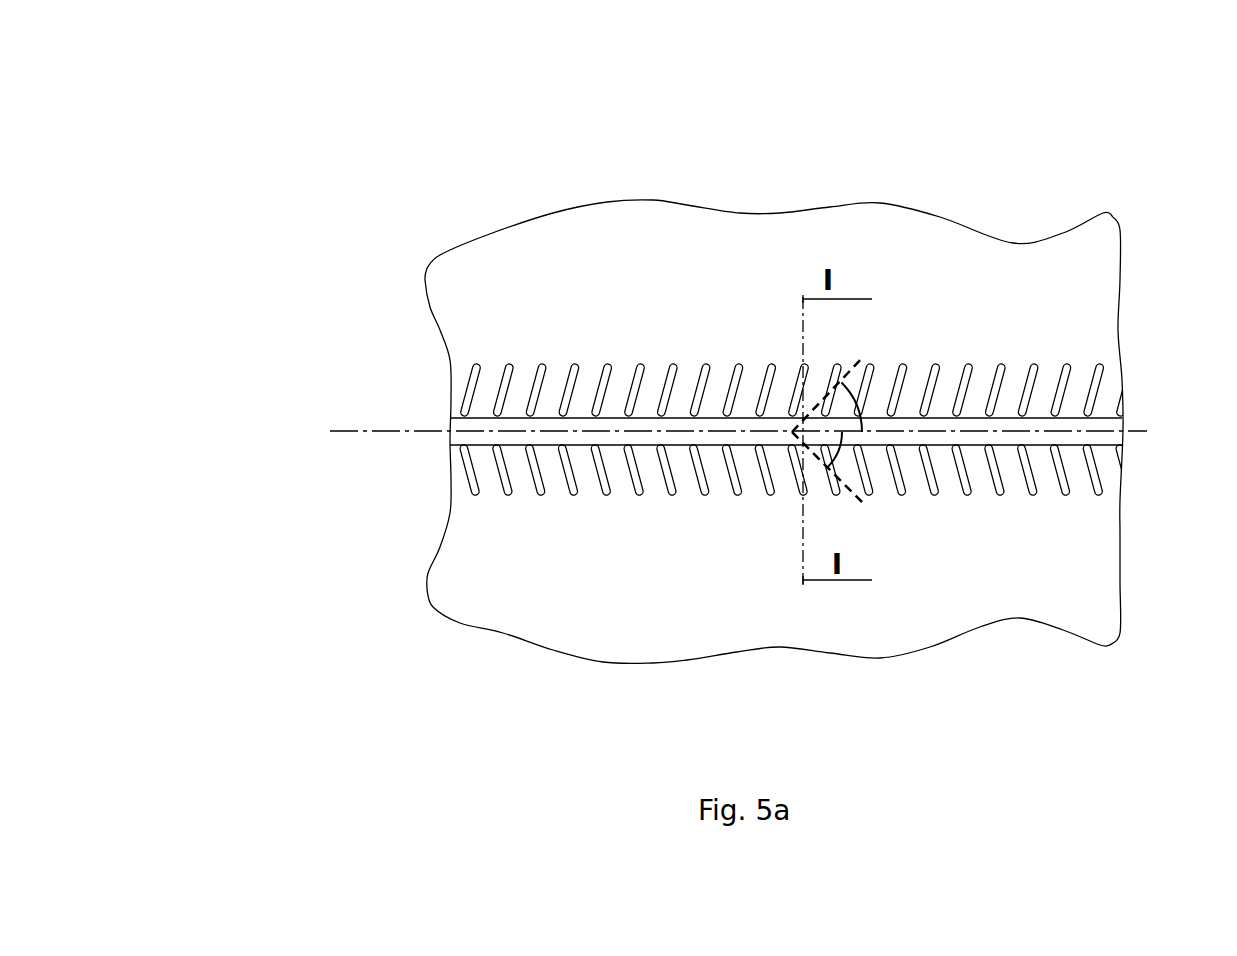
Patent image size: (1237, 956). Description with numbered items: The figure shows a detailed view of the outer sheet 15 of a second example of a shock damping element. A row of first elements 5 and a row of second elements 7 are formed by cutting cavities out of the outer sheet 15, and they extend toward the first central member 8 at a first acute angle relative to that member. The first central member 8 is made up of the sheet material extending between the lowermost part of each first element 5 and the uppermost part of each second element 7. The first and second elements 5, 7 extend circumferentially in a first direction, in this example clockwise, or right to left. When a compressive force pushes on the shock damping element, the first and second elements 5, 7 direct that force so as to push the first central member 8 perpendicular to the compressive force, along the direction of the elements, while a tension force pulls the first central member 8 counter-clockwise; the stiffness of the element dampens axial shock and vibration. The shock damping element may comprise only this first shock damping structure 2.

The outer sheet 15 is at (342, 187).
The first shock damping structure 2 is at (412, 502).
The first element 5 is at (601, 392).
The second element 7 is at (637, 470).
The first central member 8 is at (568, 440).